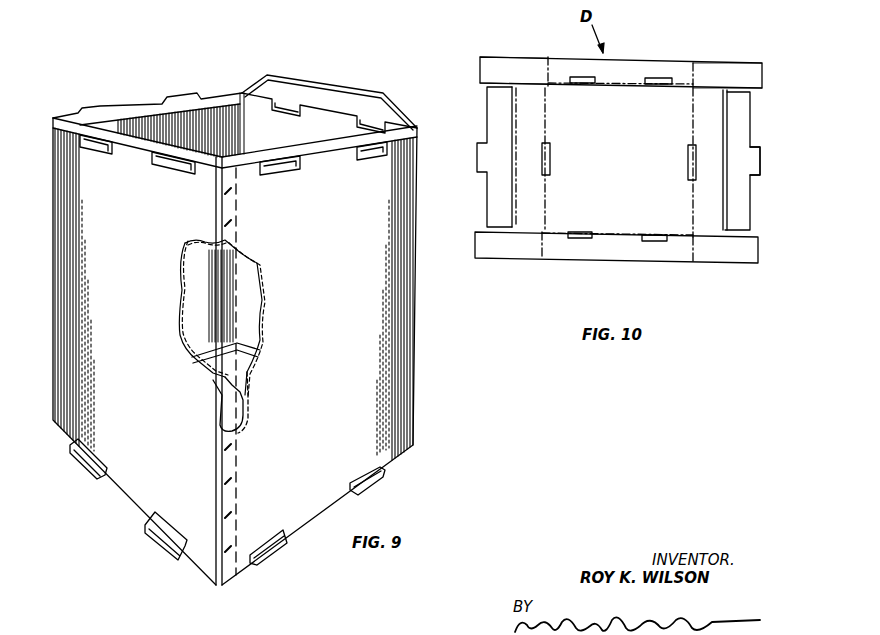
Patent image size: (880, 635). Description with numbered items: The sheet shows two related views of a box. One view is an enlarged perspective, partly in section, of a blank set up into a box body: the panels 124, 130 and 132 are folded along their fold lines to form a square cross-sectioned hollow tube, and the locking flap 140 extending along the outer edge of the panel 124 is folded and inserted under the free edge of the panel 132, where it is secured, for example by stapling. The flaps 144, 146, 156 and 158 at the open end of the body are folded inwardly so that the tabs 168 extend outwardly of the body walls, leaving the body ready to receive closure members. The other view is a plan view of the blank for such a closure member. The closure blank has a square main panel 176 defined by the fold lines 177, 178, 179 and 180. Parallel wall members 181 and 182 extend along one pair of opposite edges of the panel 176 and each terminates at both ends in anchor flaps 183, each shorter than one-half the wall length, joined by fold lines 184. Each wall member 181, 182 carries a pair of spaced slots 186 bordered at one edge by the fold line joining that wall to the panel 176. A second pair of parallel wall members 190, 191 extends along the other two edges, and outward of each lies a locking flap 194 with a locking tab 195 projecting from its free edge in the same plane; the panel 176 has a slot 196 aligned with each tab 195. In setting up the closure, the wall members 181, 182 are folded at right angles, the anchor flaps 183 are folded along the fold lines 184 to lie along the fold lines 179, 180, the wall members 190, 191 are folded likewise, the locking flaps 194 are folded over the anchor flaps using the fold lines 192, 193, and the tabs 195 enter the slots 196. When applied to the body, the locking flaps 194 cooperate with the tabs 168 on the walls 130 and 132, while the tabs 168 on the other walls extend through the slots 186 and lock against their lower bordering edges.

In FIG. 9, the panel 124 is at (144, 274).
In FIG. 9, the panel 130 is at (211, 329).
In FIG. 9, the panel 132 is at (324, 319).
In FIG. 9, the locking flap 140 is at (249, 394).
In FIG. 9, the flap 144 is at (322, 88).
In FIG. 9, the flap 146 is at (150, 142).
In FIG. 9, the flap 156 is at (162, 112).
In FIG. 9, the flap 158 is at (306, 140).
In FIG. 9, the tab 168 is at (92, 110).
In FIG. 10, the main panel 176 is at (634, 156).
In FIG. 10, the fold line 177 is at (610, 233).
In FIG. 10, the fold line 178 is at (603, 87).
In FIG. 10, the fold line 179 is at (693, 137).
In FIG. 10, the fold line 180 is at (546, 195).
In FIG. 10, the wall member 181 is at (603, 265).
In FIG. 10, the wall member 182 is at (621, 58).
In FIG. 10, the anchor flap 183 is at (525, 79).
In FIG. 10, the fold line 184 is at (548, 75).
In FIG. 10, the slot 186 is at (577, 77).
In FIG. 10, the wall member 190 is at (724, 115).
In FIG. 10, the wall member 191 is at (544, 111).
In FIG. 10, the fold line 192 is at (517, 137).
In FIG. 10, the fold line 193 is at (486, 188).
In FIG. 10, the locking flap 194 is at (751, 198).
In FIG. 10, the locking tab 195 is at (760, 162).
In FIG. 10, the slot 196 is at (688, 170).